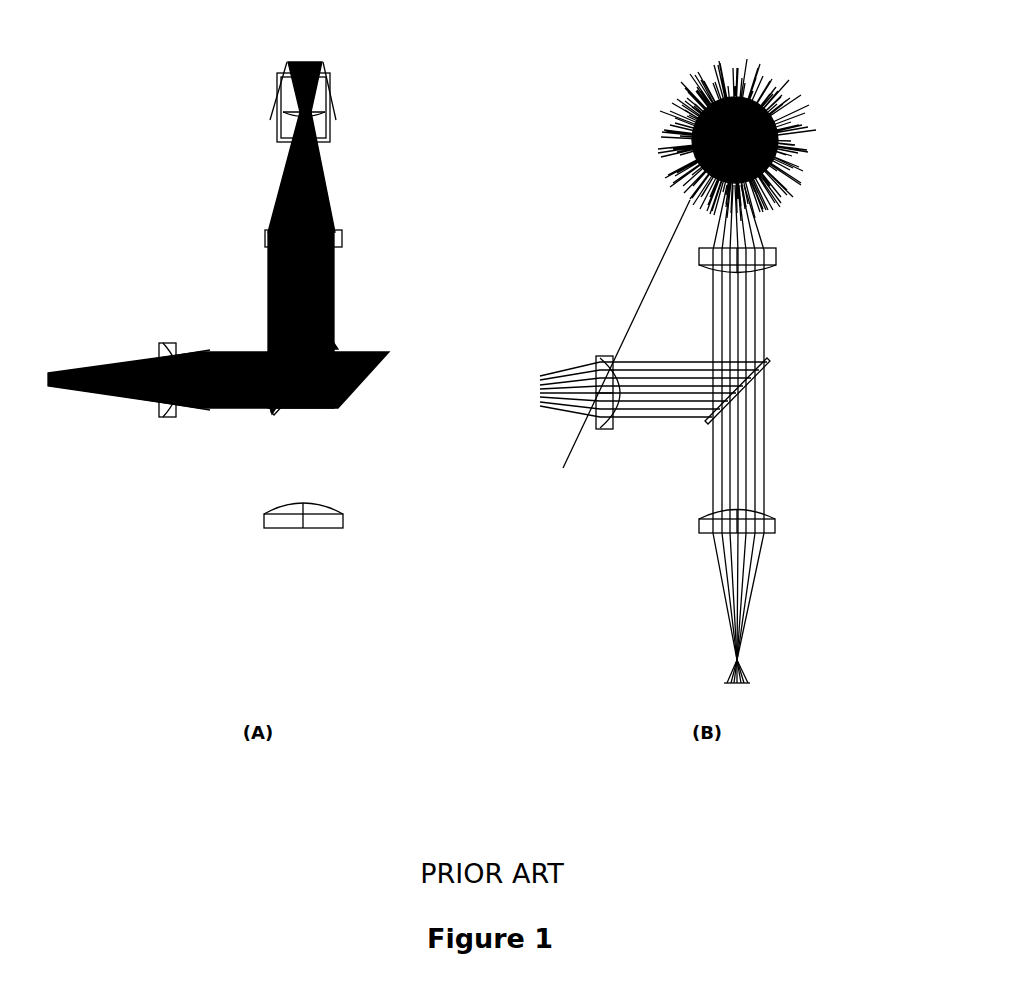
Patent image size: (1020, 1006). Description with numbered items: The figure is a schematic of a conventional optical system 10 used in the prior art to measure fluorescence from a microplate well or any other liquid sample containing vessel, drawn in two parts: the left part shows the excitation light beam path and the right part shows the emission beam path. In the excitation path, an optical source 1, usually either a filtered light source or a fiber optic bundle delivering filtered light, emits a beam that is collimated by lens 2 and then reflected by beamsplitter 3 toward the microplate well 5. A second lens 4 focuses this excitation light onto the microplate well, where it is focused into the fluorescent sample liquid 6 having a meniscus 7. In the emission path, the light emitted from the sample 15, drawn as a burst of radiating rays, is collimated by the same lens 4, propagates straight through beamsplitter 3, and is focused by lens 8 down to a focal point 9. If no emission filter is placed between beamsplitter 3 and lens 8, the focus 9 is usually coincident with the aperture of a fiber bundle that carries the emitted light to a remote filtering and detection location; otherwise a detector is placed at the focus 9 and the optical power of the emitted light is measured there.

The optical source 1 is at (77, 370).
The lens 2 is at (165, 343).
The beamsplitter 3 is at (340, 340).
The second lens 4 is at (343, 238).
The microplate well 5 is at (331, 87).
The fluorescent sample liquid 6 is at (317, 124).
The meniscus 7 is at (293, 112).
The lens 8 is at (783, 527).
The focal point 9 is at (752, 682).
The conventional optical system 10 is at (167, 508).
The sample 15 is at (802, 92).